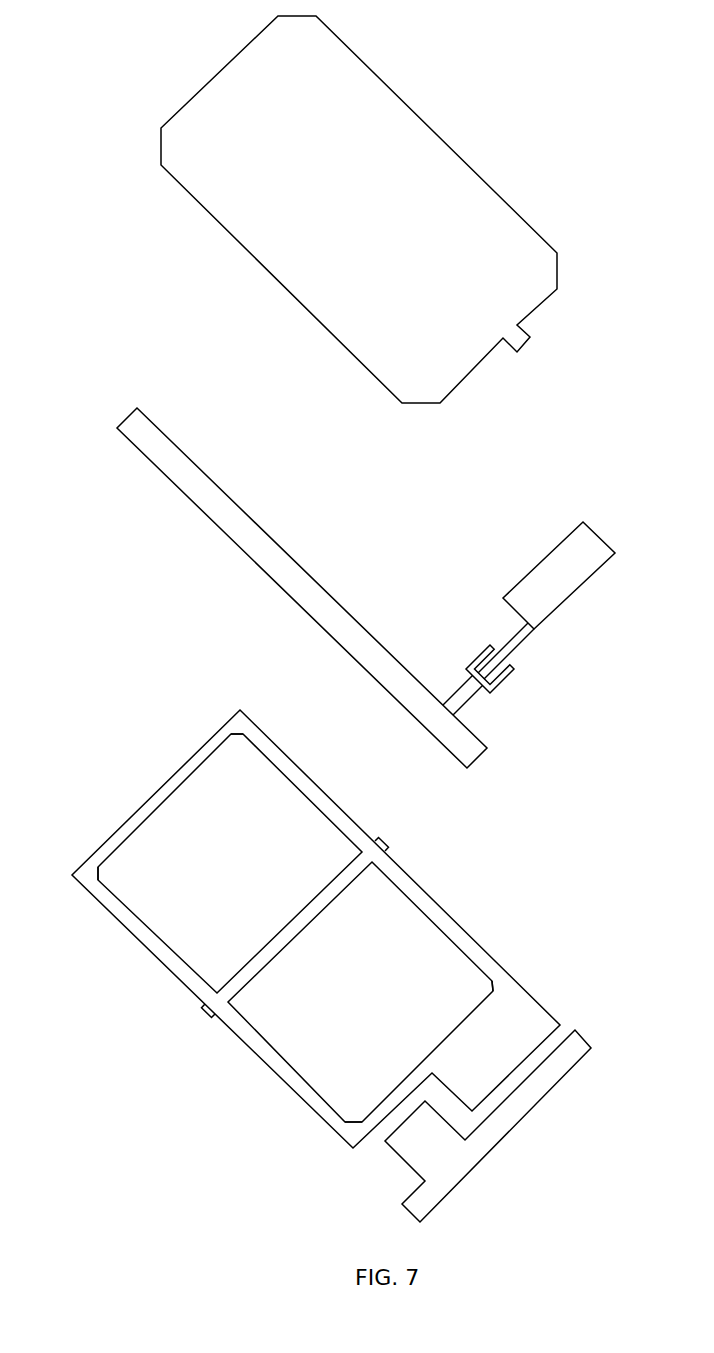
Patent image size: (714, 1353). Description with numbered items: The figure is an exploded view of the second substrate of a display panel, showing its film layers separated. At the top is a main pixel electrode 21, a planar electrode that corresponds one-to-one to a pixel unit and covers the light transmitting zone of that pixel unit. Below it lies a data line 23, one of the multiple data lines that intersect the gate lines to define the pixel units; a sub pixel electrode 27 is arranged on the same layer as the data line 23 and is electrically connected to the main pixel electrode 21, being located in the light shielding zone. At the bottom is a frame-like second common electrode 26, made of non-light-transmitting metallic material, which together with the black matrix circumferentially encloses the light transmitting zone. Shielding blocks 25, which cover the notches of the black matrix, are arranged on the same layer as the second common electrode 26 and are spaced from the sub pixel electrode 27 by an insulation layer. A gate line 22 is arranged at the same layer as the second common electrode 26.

The main pixel electrode 21 is at (446, 196).
The gate line 22 is at (522, 1102).
The data line 23 is at (257, 537).
The shielding block 25 is at (230, 733).
The second common electrode 26 is at (465, 943).
The sub pixel electrode 27 is at (560, 575).